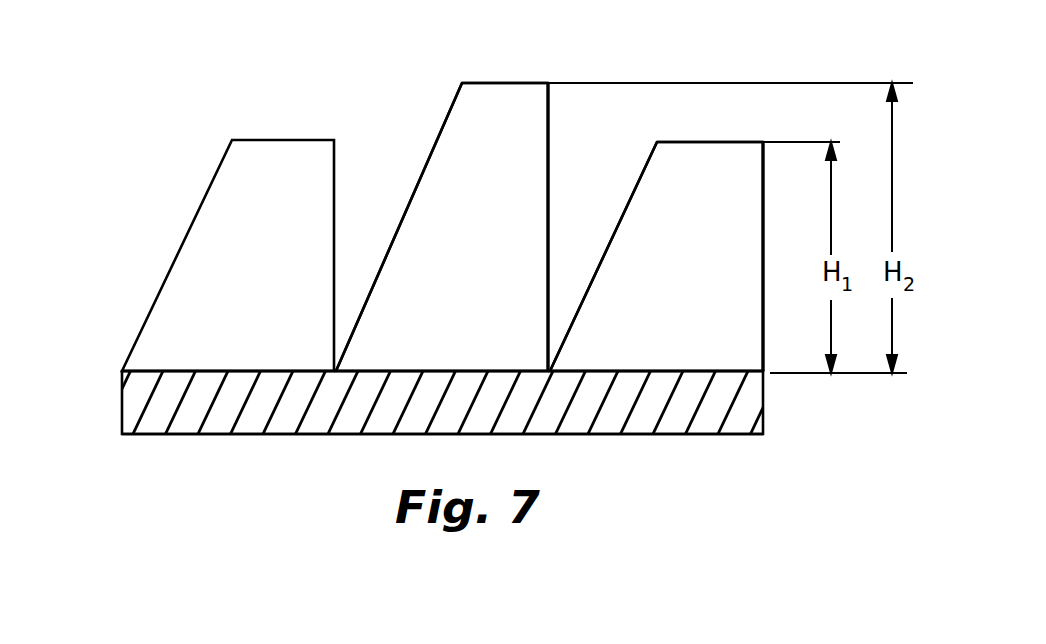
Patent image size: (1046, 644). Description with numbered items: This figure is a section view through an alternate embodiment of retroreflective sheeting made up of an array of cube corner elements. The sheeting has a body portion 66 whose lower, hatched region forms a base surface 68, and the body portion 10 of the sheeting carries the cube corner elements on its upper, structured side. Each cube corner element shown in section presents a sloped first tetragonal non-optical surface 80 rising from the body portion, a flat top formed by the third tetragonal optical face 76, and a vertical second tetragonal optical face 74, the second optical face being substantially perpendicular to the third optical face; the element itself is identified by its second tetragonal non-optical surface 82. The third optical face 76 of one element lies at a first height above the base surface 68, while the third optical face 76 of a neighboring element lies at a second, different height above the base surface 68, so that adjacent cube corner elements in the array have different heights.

The body portion 10 is at (752, 407).
The body portion 66 is at (122, 402).
The base surface 68 is at (671, 437).
The second tetragonal optical face 74 is at (552, 99).
The third tetragonal optical face 76 is at (500, 83).
The first tetragonal non-optical surface 80 is at (437, 128).
The second tetragonal non-optical surface 82 is at (490, 257).